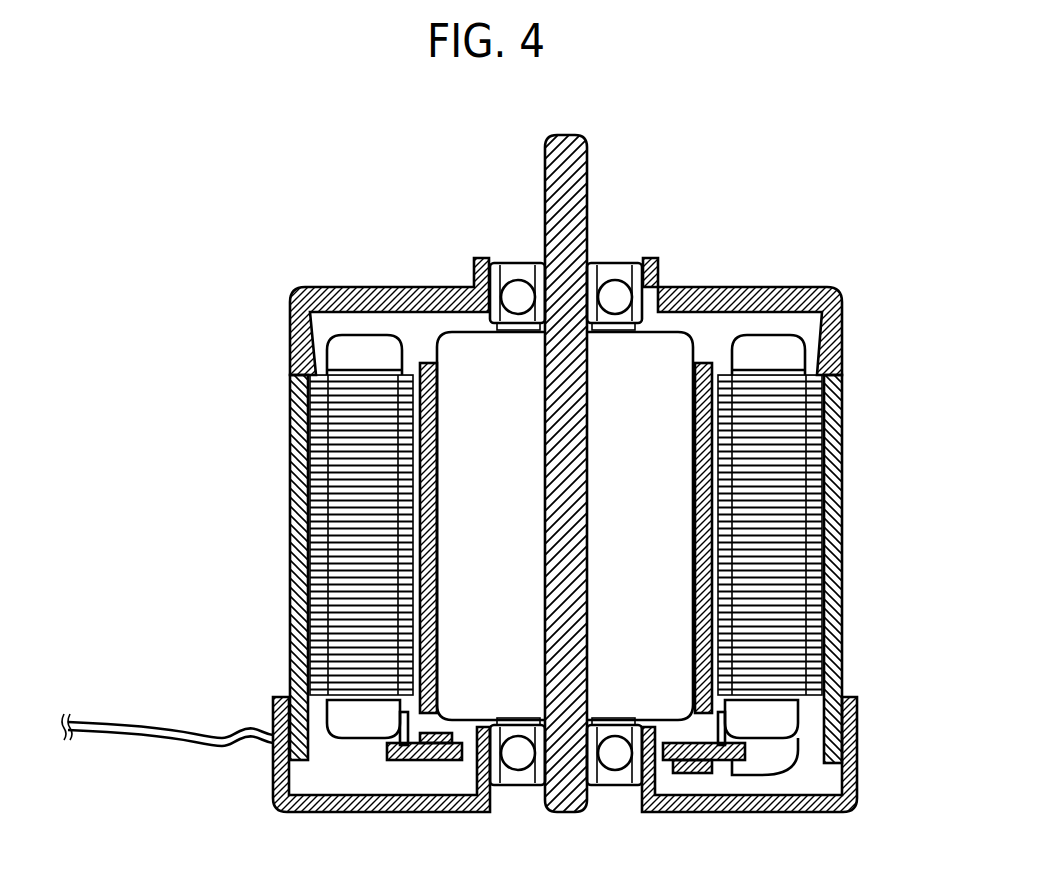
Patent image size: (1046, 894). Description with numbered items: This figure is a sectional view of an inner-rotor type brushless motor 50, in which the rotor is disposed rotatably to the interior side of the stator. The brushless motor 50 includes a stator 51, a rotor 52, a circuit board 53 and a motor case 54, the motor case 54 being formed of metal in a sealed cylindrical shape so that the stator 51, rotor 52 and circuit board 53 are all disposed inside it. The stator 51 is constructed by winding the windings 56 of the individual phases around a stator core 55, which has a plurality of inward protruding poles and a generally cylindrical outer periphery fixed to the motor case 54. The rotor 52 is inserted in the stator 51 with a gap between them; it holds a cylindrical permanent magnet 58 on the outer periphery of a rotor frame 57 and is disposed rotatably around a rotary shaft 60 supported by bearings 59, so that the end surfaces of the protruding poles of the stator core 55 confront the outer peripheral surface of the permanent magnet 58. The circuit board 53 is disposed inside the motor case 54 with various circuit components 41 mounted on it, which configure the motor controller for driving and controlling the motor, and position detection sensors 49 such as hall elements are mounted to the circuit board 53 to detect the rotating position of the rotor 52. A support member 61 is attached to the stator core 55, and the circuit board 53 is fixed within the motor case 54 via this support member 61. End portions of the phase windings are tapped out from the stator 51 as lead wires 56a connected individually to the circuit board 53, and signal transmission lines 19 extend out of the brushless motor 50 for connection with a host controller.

The signal transmission lines 19 is at (222, 732).
The circuit components 41 is at (697, 770).
The position detection sensors 49 is at (445, 743).
The brushless motor 50 is at (305, 286).
The stator 51 is at (607, 575).
The rotor 52 is at (559, 457).
The circuit board 53 is at (425, 757).
The motor case 54 is at (847, 735).
The stator core 55 is at (815, 468).
The windings 56 is at (787, 355).
The lead wires 56a is at (795, 758).
The rotor frame 57 is at (475, 345).
The permanent magnet 58 is at (421, 362).
The bearings 59 is at (524, 276).
The rotary shaft 60 is at (573, 198).
The support member 61 is at (404, 740).